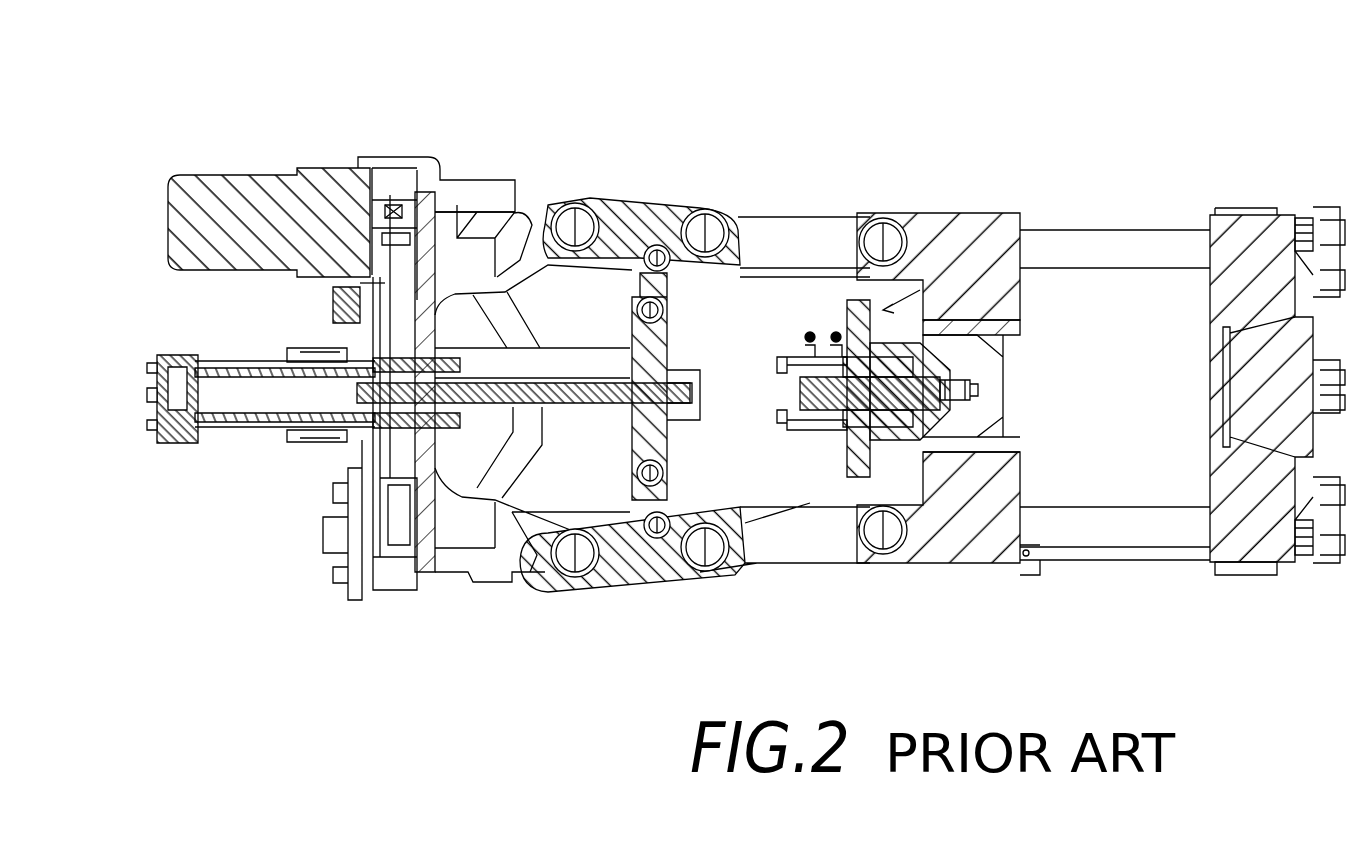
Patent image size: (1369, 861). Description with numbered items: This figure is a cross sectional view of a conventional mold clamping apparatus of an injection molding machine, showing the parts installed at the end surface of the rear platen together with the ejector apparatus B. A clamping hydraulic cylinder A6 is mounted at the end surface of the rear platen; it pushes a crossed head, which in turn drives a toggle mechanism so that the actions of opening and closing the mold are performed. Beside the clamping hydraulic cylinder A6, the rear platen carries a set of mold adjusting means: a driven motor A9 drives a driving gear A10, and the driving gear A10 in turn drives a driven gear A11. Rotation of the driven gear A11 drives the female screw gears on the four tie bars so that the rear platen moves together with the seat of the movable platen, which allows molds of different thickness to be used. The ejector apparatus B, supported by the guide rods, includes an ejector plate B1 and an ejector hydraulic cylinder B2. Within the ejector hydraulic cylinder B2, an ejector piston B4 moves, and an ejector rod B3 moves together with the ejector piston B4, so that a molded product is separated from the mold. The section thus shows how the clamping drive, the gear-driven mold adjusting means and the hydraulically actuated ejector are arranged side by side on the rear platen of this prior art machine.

The driven motor A9 is at (247, 170).
The driving gear A10 is at (390, 192).
The driven gear A11 is at (382, 278).
The clamping hydraulic cylinder A6 is at (170, 442).
The ejector apparatus B is at (960, 230).
The ejector plate B1 is at (845, 355).
The ejector hydraulic cylinder B2 is at (790, 365).
The ejector rod B3 is at (978, 390).
The ejector piston B4 is at (883, 407).